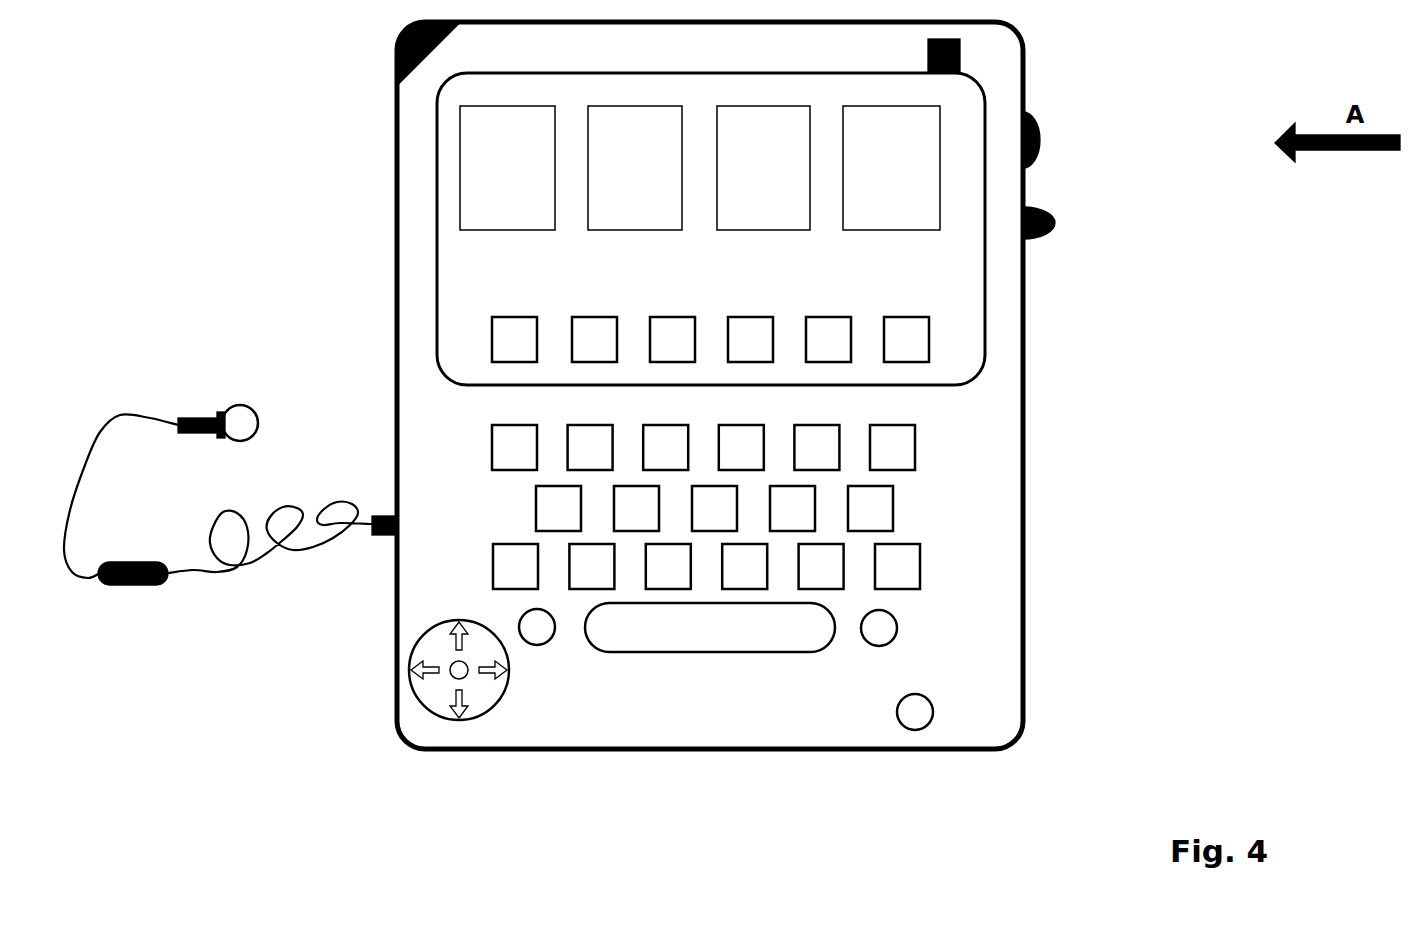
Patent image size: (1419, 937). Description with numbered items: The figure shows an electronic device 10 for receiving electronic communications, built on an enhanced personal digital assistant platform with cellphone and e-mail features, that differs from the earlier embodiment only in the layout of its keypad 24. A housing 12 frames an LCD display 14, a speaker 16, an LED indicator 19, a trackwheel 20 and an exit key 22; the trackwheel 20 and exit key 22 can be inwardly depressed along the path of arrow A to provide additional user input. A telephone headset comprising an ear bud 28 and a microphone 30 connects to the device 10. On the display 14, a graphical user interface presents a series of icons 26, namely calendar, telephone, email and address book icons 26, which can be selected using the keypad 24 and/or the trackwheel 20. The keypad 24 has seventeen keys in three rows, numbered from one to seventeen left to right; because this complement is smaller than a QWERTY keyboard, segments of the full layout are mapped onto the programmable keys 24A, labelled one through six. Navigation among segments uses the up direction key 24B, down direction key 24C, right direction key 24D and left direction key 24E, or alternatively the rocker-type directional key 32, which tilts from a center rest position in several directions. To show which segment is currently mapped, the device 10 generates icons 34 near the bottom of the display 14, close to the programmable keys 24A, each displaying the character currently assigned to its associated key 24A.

The electronic device 10 is at (588, 755).
The housing 12 is at (847, 722).
The LCD display 14 is at (789, 229).
The speaker 16 is at (380, 43).
The LED indicator 19 is at (975, 52).
The trackwheel 20 is at (1062, 141).
The exit key 22 is at (1067, 224).
The keypad 24 is at (769, 539).
The programmable keys 24A is at (504, 425).
The up direction key 24B is at (536, 503).
The down direction key 24C is at (594, 589).
The right direction key 24D is at (493, 560).
The left direction key 24E is at (551, 640).
The icons 26 is at (700, 195).
The ear bud 28 is at (260, 398).
The microphone 30 is at (133, 550).
The directional key 32 is at (418, 700).
The icons 34 is at (508, 317).